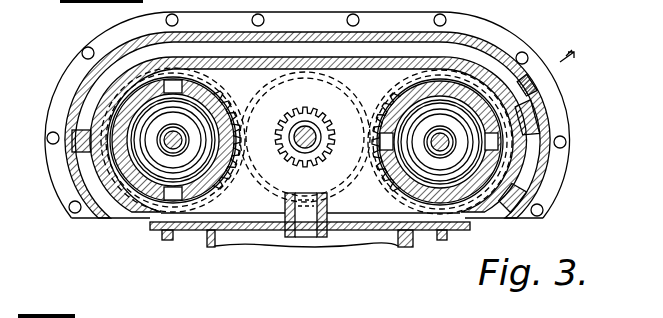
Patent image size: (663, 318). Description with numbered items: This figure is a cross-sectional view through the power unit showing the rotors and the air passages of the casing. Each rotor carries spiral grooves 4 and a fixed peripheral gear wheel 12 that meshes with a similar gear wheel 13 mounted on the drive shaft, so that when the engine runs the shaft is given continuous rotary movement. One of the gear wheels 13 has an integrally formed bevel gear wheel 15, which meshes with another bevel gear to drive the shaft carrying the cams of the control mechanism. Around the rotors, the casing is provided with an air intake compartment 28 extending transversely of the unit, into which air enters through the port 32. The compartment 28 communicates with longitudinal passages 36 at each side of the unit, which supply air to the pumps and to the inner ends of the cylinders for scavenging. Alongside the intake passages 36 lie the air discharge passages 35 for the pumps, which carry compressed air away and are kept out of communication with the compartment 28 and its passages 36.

The spiral grooves 4 is at (160, 204).
The peripheral gear wheel 12 is at (212, 176).
The gear wheel 13 is at (250, 170).
The bevel gear wheel 15 is at (280, 143).
The air intake compartment 28 is at (481, 56).
The port 32 is at (537, 82).
The air discharge passages 35 is at (533, 168).
The passages 36 is at (530, 119).